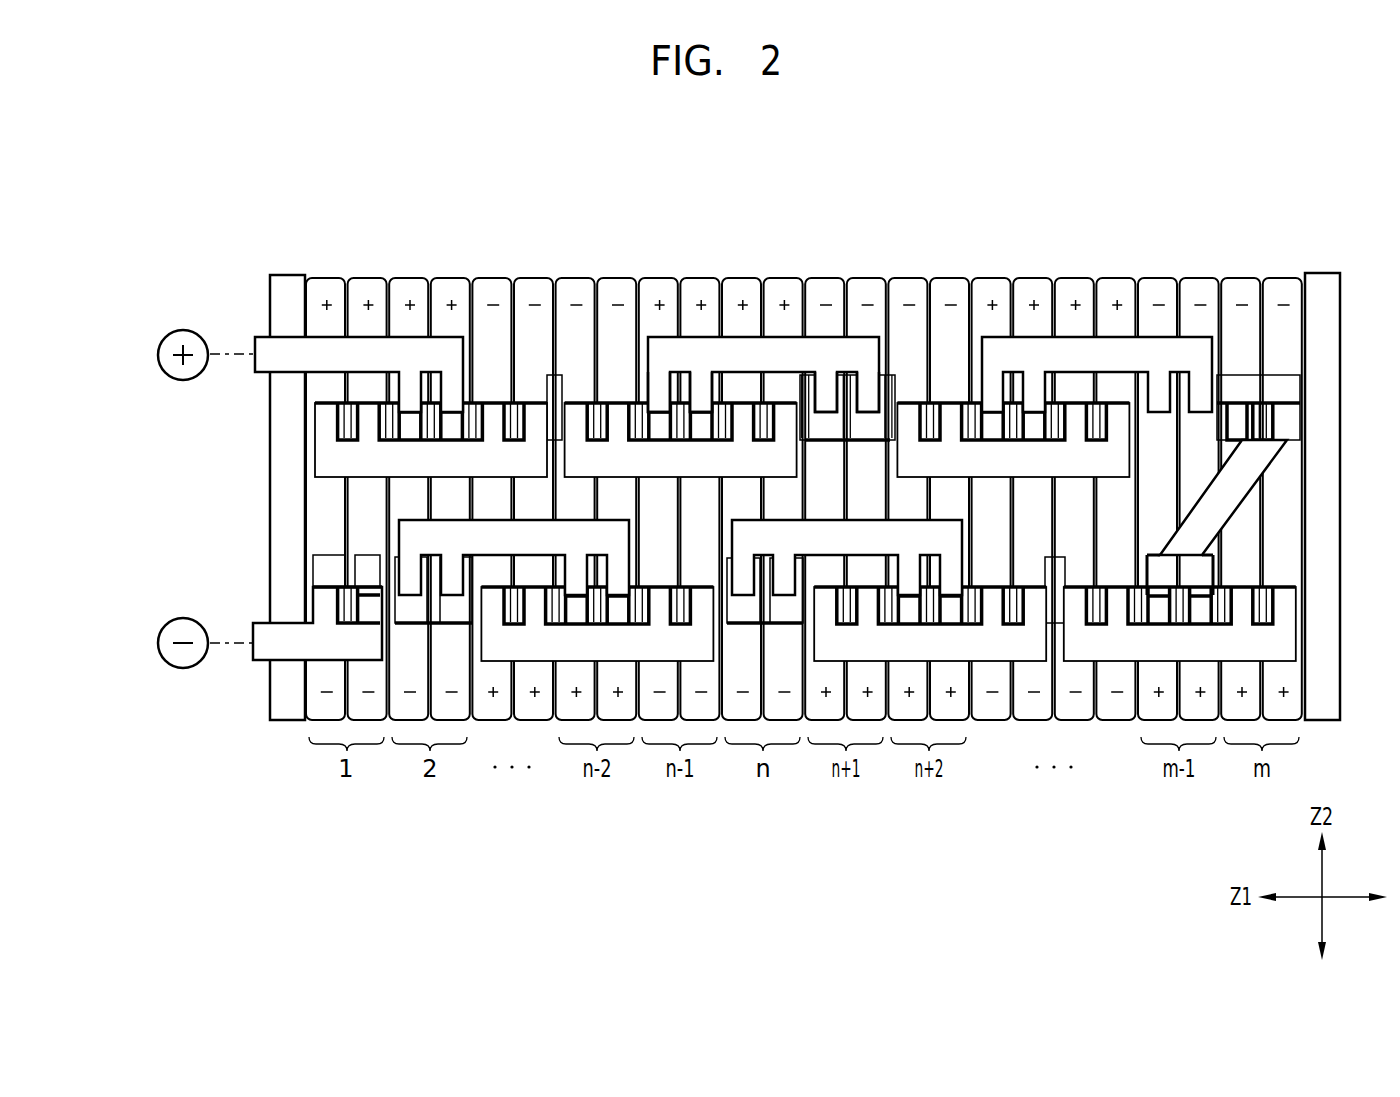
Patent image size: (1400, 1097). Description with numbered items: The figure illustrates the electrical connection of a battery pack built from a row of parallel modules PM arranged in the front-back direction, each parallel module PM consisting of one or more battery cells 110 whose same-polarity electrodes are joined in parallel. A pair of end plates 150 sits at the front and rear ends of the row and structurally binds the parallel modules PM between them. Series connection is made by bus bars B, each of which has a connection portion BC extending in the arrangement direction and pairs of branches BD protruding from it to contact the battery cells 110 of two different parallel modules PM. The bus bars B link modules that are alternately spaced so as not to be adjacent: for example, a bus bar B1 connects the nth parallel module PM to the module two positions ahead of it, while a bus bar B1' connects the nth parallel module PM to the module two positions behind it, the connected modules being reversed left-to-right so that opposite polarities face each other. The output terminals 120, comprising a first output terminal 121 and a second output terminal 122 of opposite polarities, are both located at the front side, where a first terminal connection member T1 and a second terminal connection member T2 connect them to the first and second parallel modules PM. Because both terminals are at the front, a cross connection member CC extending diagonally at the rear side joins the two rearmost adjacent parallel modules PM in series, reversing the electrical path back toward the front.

The battery cell 110 is at (327, 278).
The end plate 150 is at (280, 273).
The output terminals 120 is at (92, 340).
The first output terminal 121 is at (157, 643).
The second output terminal 122 is at (157, 355).
The first terminal connection member T1 is at (297, 648).
The second terminal connection member T2 is at (384, 355).
The bus bar B is at (930, 295).
The connection portion BC is at (770, 353).
The branches BD is at (858, 220).
The bus bar B1 is at (681, 349).
The bus bar B1' is at (847, 672).
The parallel module PM is at (972, 258).
The cross connection member CC is at (1235, 500).